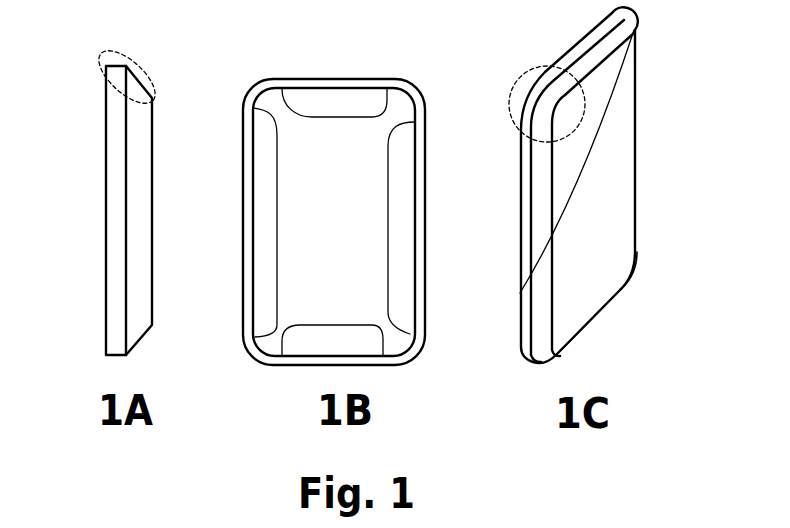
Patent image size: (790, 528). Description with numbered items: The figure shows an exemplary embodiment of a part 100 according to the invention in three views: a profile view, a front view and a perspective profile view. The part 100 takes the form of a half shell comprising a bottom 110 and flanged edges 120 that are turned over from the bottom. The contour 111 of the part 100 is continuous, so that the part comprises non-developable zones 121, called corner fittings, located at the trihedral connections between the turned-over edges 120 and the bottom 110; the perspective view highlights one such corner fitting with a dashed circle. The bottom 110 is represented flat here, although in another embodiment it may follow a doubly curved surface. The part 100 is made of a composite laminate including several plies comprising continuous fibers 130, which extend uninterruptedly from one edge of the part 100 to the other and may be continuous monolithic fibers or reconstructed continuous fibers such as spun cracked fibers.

The part 100 is at (365, 191).
The bottom 110 is at (152, 148).
The contour 111 is at (425, 227).
The flanged edges 120 is at (157, 81).
The non-developable zones 121 is at (510, 100).
The continuous fibers 130 is at (610, 106).